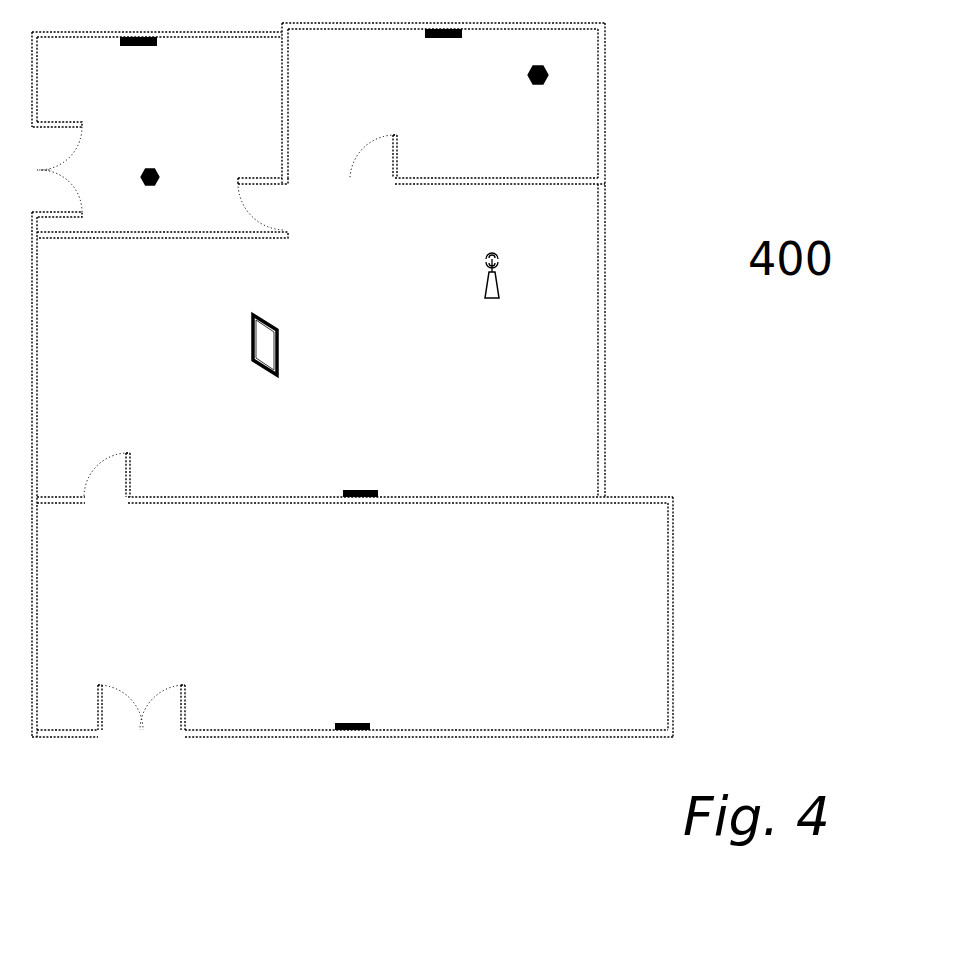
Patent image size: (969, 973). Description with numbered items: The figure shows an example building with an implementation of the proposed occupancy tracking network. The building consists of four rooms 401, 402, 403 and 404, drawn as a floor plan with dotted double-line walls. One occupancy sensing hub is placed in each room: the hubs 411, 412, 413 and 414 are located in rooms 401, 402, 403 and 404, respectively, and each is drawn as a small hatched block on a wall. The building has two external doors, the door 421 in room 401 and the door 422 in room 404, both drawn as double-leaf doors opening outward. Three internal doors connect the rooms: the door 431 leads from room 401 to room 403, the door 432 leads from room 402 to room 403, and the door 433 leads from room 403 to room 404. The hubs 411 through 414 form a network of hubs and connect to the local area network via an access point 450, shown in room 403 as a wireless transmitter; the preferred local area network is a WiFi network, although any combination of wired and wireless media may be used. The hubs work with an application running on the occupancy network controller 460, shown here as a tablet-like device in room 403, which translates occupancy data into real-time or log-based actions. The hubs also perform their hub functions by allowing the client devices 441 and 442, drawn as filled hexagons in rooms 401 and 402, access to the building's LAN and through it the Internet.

The room 401 is at (263, 93).
The room 402 is at (587, 163).
The room 403 is at (587, 478).
The room 404 is at (660, 723).
The occupancy sensing hub 411 is at (118, 44).
The occupancy sensing hub 412 is at (425, 40).
The occupancy sensing hub 413 is at (348, 489).
The occupancy sensing hub 414 is at (338, 720).
The external door 421 is at (78, 176).
The external door 422 is at (140, 733).
The internal door 431 is at (232, 194).
The internal door 432 is at (372, 139).
The internal door 433 is at (116, 506).
The client device 441 is at (143, 186).
The client device 442 is at (528, 81).
The access point 450 is at (474, 297).
The occupancy network controller 460 is at (246, 366).